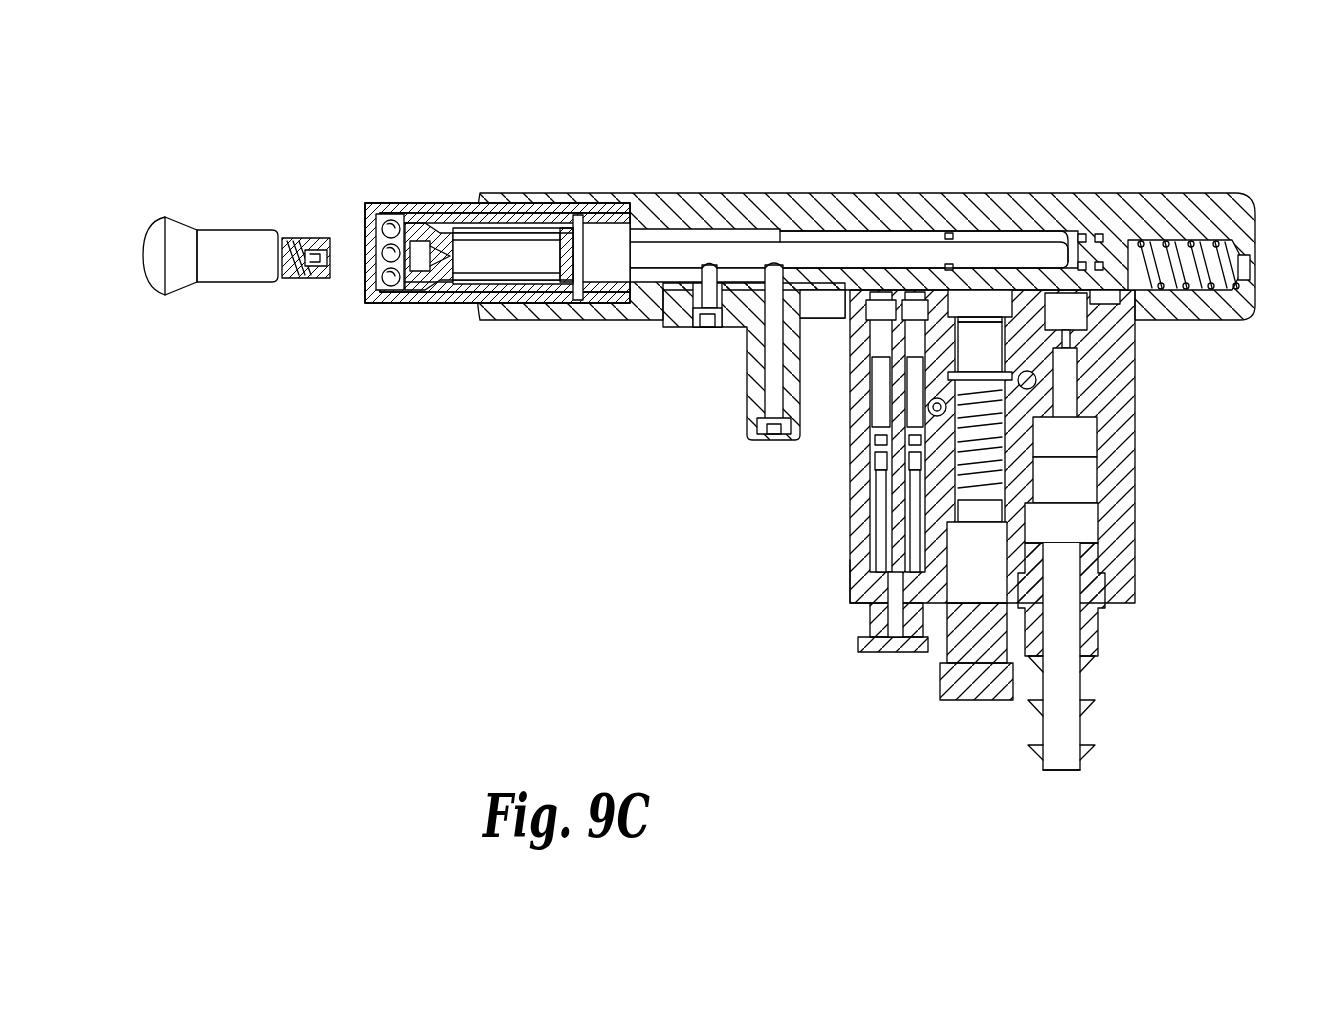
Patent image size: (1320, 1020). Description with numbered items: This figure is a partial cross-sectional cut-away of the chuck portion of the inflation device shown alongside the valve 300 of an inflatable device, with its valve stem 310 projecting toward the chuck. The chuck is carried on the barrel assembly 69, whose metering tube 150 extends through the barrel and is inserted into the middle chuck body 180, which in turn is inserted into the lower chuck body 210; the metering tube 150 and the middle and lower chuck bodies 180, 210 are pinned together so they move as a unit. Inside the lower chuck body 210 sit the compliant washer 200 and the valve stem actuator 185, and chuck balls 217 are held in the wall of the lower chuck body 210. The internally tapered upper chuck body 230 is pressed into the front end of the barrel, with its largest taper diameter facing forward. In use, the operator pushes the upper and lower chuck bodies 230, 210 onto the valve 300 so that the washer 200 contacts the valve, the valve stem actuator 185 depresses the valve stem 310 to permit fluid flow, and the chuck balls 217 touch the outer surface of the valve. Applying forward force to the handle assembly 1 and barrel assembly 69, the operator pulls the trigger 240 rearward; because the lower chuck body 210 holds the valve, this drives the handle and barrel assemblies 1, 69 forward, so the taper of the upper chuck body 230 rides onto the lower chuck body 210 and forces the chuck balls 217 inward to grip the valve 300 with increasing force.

The barrel assembly 69 is at (768, 175).
The metering tube 150 is at (1024, 244).
The trigger 240 is at (730, 384).
The handle assembly 1 is at (828, 567).
The middle chuck body 180 is at (544, 196).
The compliant washer 200 is at (422, 208).
The chuck balls 217 is at (383, 252).
The upper chuck body 230 is at (450, 305).
The lower chuck body 210 is at (475, 305).
The valve stem actuator 185 is at (462, 257).
The valve 300 is at (271, 322).
The valve stem 310 is at (317, 240).